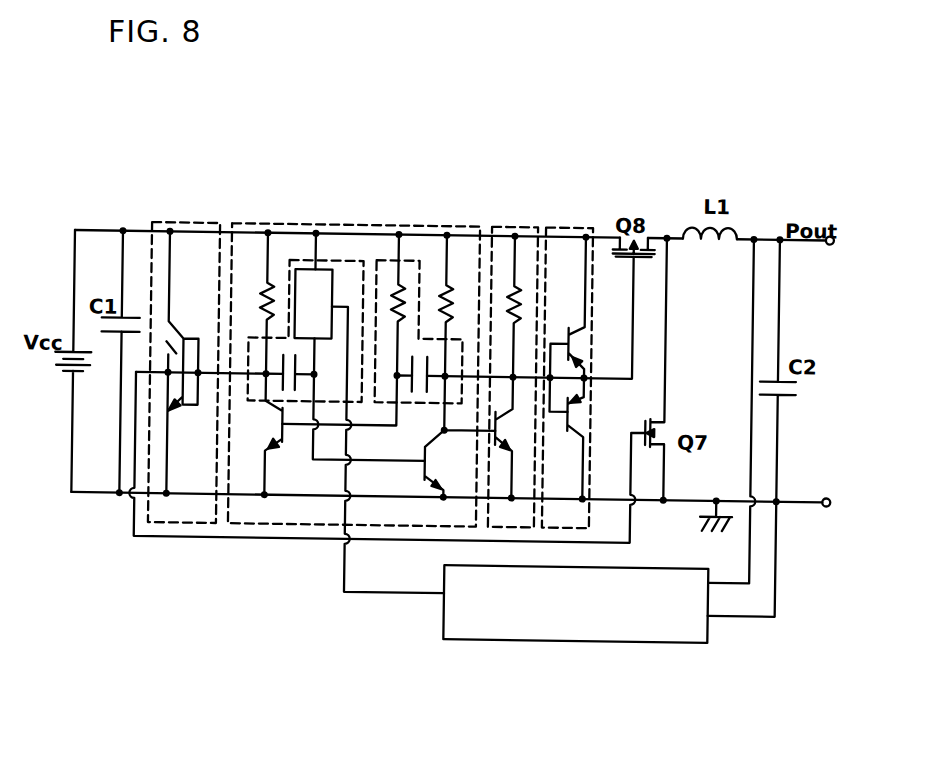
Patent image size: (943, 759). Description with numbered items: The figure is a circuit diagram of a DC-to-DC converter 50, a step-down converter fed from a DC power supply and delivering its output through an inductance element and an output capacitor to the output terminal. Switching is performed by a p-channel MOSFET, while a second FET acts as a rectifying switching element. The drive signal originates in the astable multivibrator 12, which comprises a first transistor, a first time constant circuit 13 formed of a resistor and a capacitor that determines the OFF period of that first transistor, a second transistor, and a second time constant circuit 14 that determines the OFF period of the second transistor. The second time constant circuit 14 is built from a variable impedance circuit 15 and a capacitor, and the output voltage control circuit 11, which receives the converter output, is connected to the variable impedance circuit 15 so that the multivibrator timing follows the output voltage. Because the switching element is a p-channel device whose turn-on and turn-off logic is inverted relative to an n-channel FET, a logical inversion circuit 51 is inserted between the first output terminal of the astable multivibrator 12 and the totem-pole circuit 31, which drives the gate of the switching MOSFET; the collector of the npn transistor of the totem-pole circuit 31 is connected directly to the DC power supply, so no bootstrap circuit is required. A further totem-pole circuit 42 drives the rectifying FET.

The DC-to-DC converter 50 is at (410, 172).
The totem-pole circuit 42 is at (165, 221).
The astable multivibrator 12 is at (248, 221).
The variable impedance circuit 15 is at (305, 266).
The second time constant circuit 14 is at (343, 257).
The first time constant circuit 13 is at (383, 256).
The logical inversion circuit 51 is at (538, 221).
The totem-pole circuit 31 is at (590, 221).
The output voltage control circuit 11 is at (623, 636).